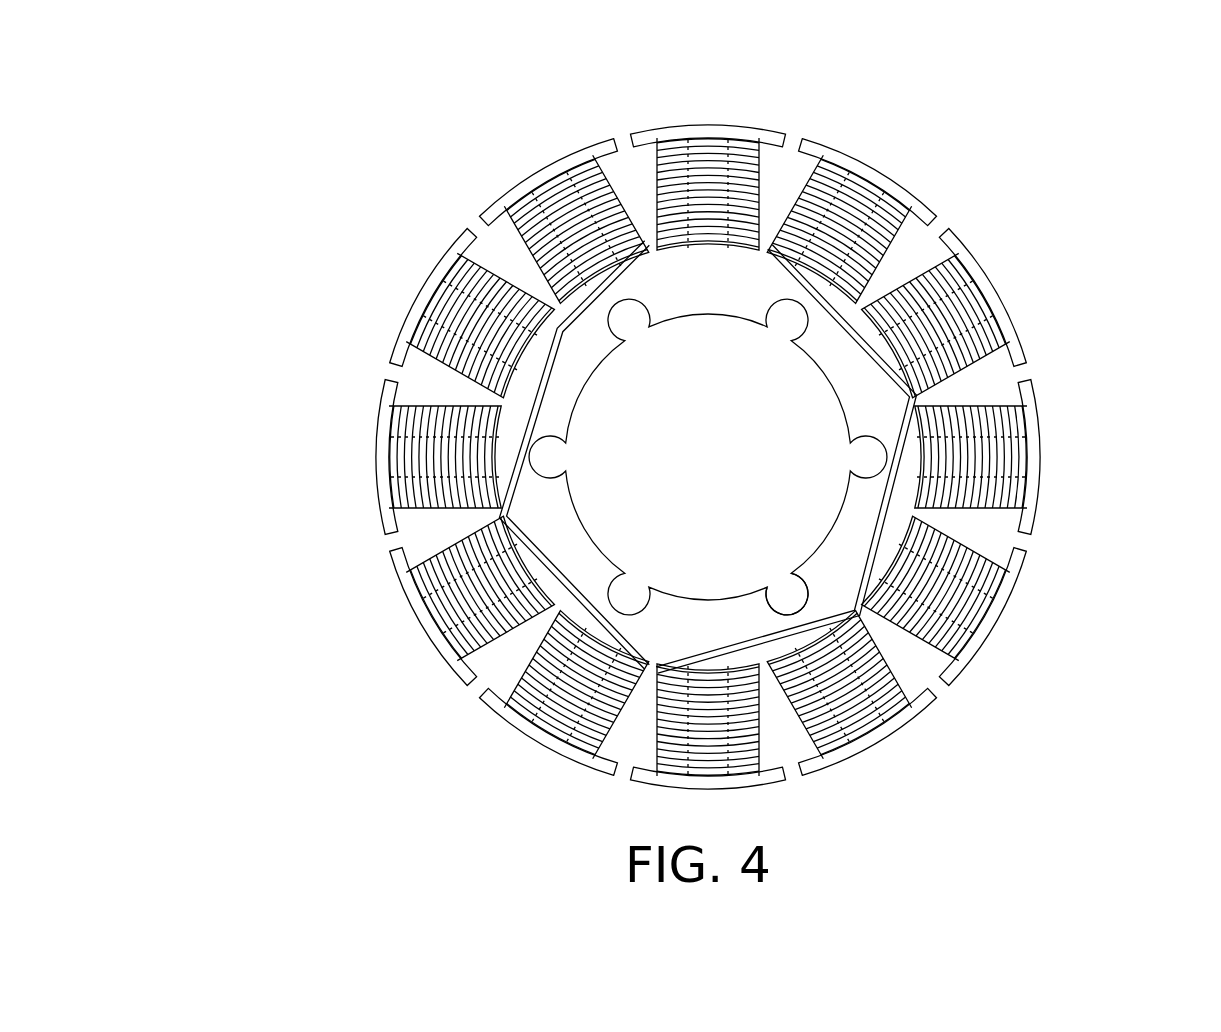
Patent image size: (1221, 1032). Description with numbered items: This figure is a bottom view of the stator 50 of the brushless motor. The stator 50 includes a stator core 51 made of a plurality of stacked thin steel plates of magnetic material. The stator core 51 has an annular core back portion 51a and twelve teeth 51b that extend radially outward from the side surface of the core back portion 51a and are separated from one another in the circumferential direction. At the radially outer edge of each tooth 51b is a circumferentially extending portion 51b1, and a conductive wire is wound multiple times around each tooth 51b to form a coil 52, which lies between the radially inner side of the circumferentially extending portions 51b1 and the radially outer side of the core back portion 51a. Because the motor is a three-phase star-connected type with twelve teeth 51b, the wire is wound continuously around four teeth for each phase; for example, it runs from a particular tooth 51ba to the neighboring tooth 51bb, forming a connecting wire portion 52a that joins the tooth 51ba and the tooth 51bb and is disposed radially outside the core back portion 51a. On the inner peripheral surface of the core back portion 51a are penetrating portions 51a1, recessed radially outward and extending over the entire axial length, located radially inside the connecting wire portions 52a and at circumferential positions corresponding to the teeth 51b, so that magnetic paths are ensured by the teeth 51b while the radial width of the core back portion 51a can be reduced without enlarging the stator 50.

The stator 50 is at (323, 106).
The stator core 51 is at (417, 280).
The core back portion 51a is at (537, 513).
The penetrating portion 51a1 is at (784, 590).
The tooth 51b is at (463, 310).
The circumferentially extending portion 51b1 is at (394, 386).
The tooth 51ba is at (1000, 458).
The tooth 51bb is at (967, 606).
The coil 52 is at (625, 185).
The connecting wire portion 52a is at (553, 370).